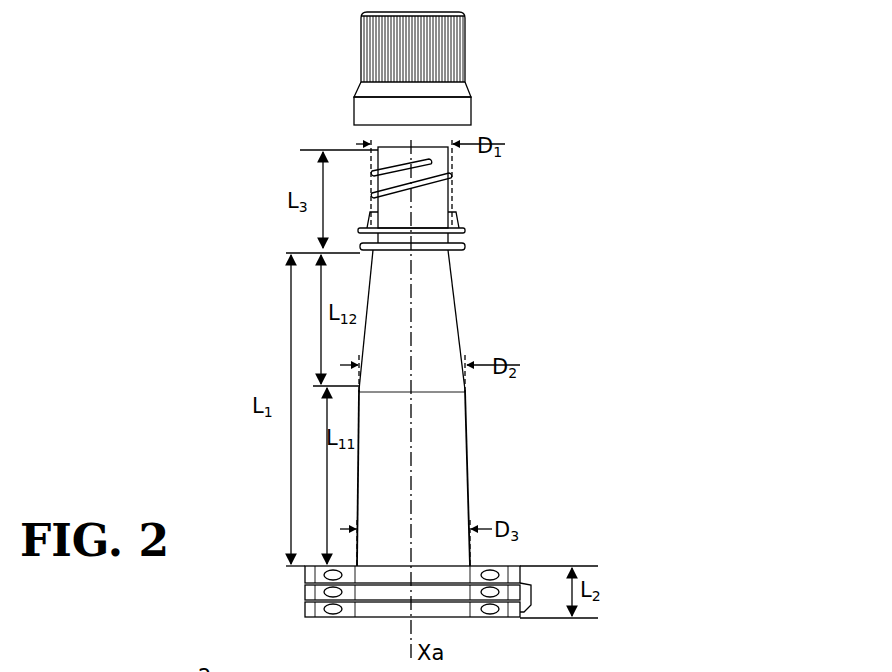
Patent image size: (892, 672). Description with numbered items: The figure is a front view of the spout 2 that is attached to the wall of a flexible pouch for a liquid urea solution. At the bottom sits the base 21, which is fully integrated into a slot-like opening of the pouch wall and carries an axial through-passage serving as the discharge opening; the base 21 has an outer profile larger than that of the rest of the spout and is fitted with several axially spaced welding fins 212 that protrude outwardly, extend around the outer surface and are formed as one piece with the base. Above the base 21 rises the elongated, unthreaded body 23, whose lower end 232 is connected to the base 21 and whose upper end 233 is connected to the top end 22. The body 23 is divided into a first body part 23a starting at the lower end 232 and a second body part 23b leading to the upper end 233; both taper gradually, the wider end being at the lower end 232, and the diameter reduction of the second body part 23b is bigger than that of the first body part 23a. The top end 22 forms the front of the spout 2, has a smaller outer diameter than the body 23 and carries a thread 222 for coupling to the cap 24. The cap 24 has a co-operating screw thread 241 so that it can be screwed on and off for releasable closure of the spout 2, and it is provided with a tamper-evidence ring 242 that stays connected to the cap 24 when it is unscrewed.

The spout 2 is at (236, 133).
The cap 24 is at (455, 70).
The tamper-evidence ring 242 is at (458, 116).
The top end 22 is at (430, 200).
The thread 222 is at (448, 182).
The upper end 233 is at (448, 250).
The body 23 is at (475, 408).
The second body part 23b is at (452, 334).
The first body part 23a is at (453, 504).
The lower end 232 is at (470, 566).
The base 21 is at (386, 600).
The welding fins 212 is at (400, 607).
The cap screw thread 241 is at (558, 668).